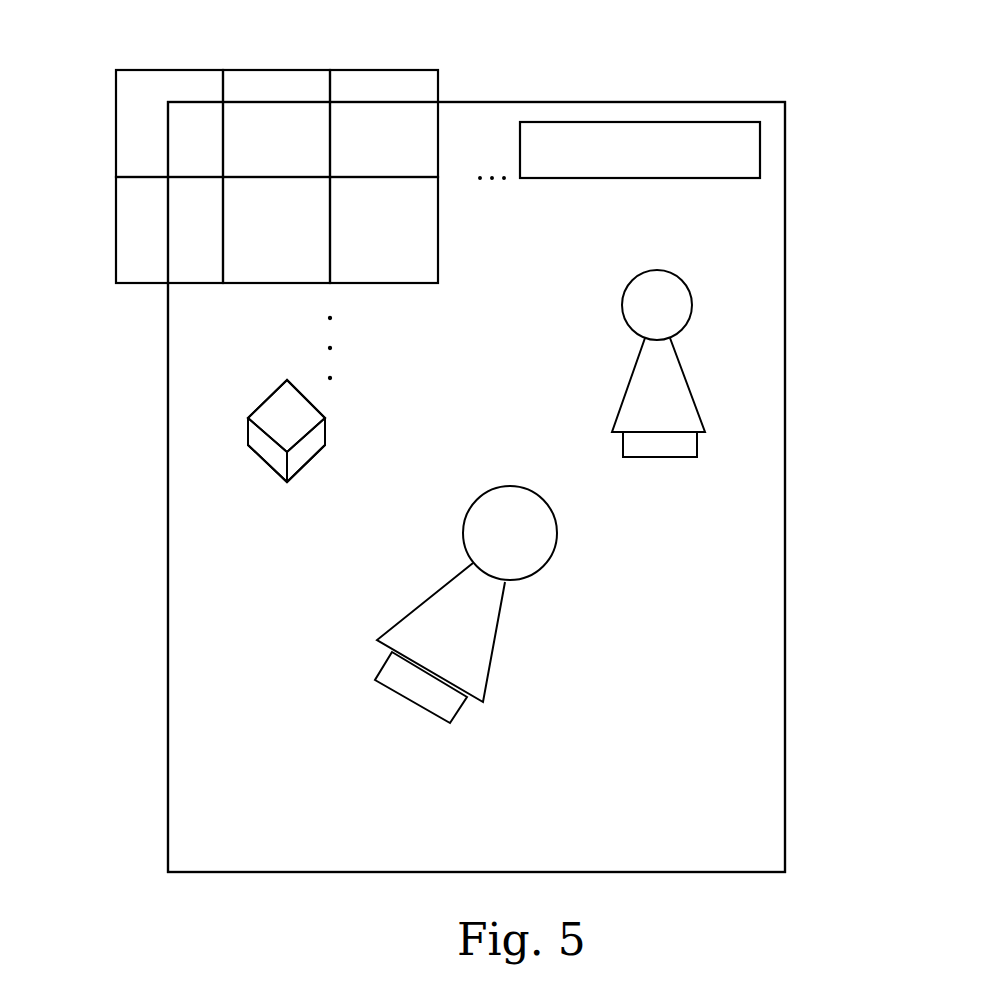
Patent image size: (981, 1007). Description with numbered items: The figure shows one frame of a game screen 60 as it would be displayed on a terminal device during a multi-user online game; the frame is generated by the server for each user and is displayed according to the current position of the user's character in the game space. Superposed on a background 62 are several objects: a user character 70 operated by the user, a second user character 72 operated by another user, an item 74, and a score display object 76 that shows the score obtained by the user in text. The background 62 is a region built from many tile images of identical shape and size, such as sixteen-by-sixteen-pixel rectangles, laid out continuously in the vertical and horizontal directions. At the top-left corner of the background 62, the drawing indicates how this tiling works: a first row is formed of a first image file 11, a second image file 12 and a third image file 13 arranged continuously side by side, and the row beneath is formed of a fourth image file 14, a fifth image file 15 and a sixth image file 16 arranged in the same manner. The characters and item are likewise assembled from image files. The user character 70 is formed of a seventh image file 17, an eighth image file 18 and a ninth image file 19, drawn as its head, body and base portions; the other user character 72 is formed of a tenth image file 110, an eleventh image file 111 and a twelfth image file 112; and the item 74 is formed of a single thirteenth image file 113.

The image file I1 11 is at (172, 80).
The image file I2 12 is at (279, 80).
The image file I3 13 is at (386, 80).
The image file I4 14 is at (128, 200).
The image file I5 15 is at (277, 231).
The image file I6 16 is at (385, 262).
The image file I7 17 is at (535, 540).
The image file I8 18 is at (458, 622).
The image file I9 19 is at (420, 687).
The game screen 60 is at (600, 102).
The background 62 is at (658, 776).
The user character 70 is at (475, 600).
The user character 72 is at (755, 343).
The item 74 is at (220, 428).
The score display object 76 is at (760, 150).
The image file I10 110 is at (670, 322).
The image file I11 111 is at (657, 370).
The image file I12 112 is at (678, 443).
The image file I13 113 is at (265, 455).